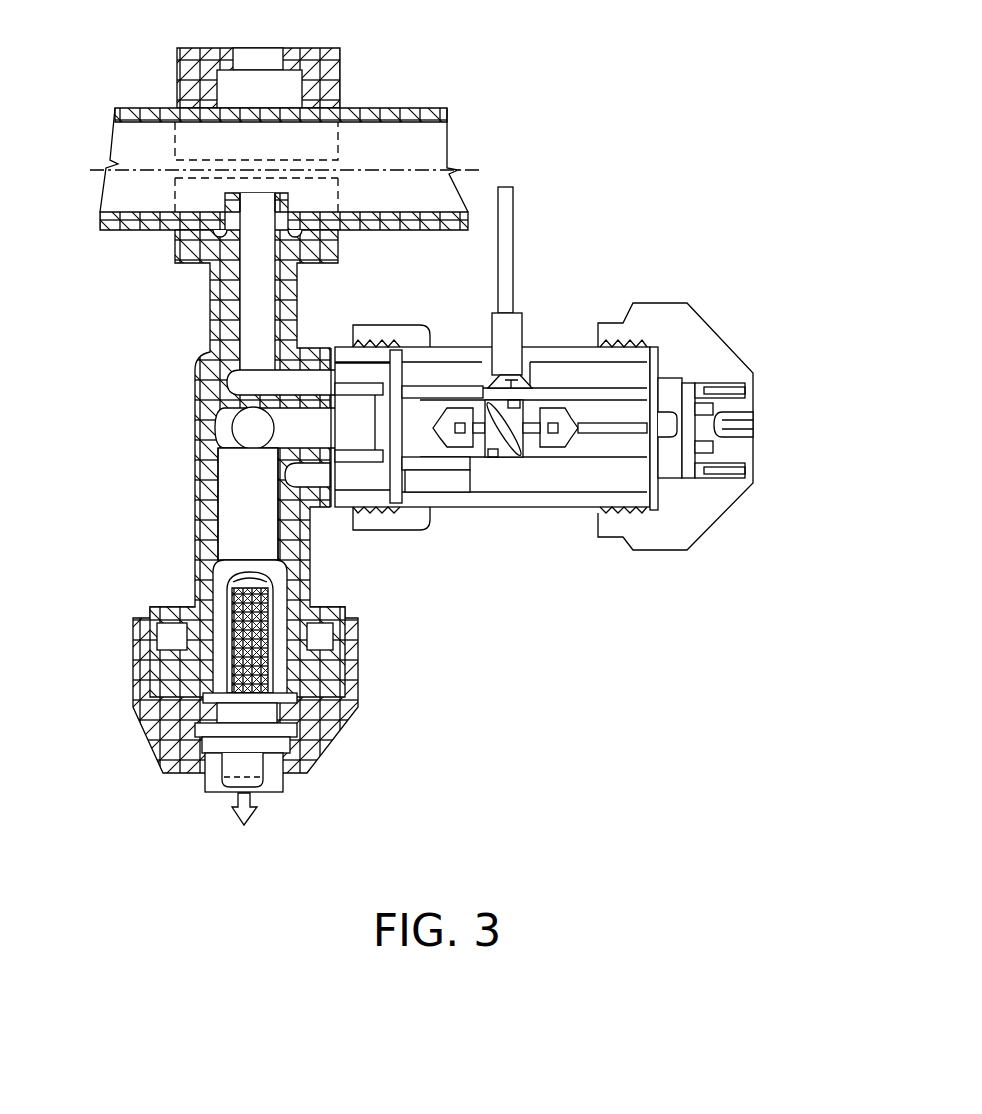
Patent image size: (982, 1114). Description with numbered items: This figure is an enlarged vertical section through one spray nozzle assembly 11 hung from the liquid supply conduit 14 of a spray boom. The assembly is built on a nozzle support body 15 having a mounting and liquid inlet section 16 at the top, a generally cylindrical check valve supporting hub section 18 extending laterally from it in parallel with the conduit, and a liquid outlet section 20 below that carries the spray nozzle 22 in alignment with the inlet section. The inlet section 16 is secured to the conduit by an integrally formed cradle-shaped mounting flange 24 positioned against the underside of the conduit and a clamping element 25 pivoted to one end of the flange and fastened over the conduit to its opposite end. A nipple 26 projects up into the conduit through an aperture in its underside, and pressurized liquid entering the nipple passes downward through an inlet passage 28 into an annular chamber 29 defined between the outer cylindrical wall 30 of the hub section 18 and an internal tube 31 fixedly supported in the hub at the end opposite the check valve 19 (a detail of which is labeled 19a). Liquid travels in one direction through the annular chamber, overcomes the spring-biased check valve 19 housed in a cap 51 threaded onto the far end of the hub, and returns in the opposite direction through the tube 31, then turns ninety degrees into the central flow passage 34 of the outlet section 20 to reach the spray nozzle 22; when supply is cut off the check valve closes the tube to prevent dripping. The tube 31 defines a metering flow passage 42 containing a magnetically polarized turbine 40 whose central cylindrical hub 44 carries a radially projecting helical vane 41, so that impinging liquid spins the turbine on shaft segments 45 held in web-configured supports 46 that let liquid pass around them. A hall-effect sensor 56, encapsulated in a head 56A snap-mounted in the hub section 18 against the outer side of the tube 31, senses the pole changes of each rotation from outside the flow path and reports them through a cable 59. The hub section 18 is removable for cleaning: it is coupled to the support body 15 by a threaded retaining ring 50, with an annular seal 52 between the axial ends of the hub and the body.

The spray nozzle assembly 11 is at (605, 302).
The liquid supply conduit 14 is at (430, 108).
The nozzle support body 15 is at (196, 382).
The mounting and liquid inlet section 16 is at (237, 332).
The check valve supporting hub section 18 is at (548, 500).
The check valve 19 is at (677, 390).
The connector contact 19a is at (663, 440).
The liquid outlet section 20 is at (195, 530).
The spray nozzle 22 is at (213, 743).
The cradle-shaped mounting flange 24 is at (178, 255).
The clamping element 25 is at (327, 73).
The nipple 26 is at (288, 195).
The inlet passage 28 is at (237, 340).
The annular chamber 29 is at (305, 378).
The outer cylindrical wall 30 is at (548, 350).
The internal tube 31 is at (474, 426).
The central flow passage 34 is at (238, 480).
The turbine 40 is at (528, 340).
The helical vane 41 is at (497, 440).
The metering flow passage 42 is at (605, 407).
The central cylindrical hub 44 is at (460, 445).
The shaft segments 45 is at (448, 406).
The web-configured supports 46 is at (462, 448).
The threaded retaining ring 50 is at (353, 538).
The cap 51 is at (663, 313).
The annular seal 52 is at (375, 325).
The hall-effect sensor 56 is at (523, 340).
The head 56A is at (512, 322).
The cable 59 is at (513, 197).